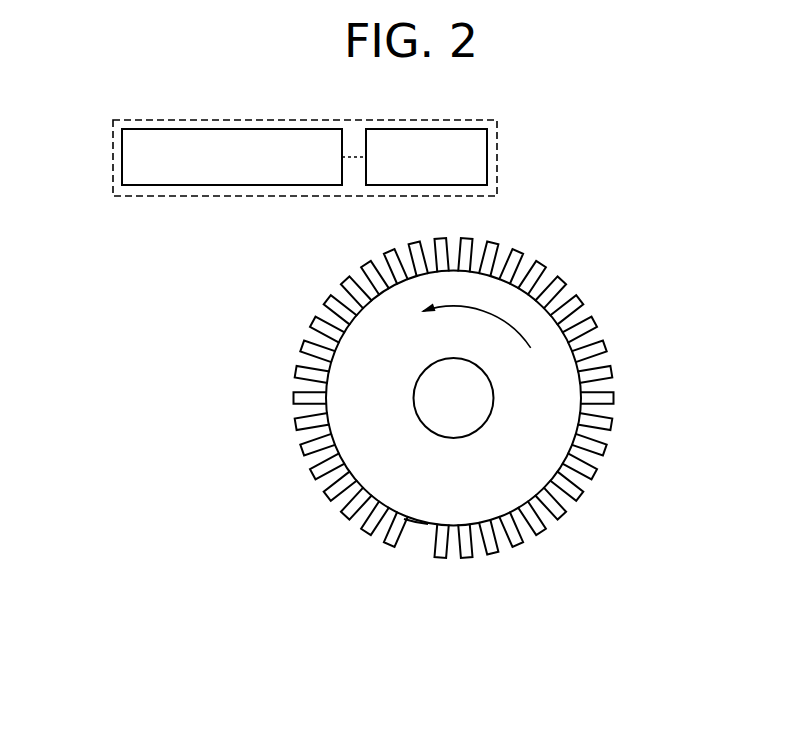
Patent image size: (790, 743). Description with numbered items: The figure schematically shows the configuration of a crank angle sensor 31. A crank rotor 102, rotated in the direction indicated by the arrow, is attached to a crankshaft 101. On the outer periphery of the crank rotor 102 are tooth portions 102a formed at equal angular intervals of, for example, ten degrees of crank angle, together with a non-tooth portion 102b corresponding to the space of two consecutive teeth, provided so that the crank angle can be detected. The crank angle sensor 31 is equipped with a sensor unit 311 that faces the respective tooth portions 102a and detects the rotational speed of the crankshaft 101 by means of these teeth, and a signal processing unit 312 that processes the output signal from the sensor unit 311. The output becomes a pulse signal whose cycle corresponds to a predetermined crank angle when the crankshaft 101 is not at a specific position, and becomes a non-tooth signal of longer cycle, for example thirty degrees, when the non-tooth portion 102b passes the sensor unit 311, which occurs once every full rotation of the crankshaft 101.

The crank angle sensor 31 is at (112, 167).
The sensor unit 311 is at (487, 157).
The signal processing unit 312 is at (147, 185).
The crankshaft 101 is at (482, 400).
The crank rotor 102 is at (547, 453).
The tooth portions 102a is at (495, 242).
The non-tooth portion 102b is at (415, 523).